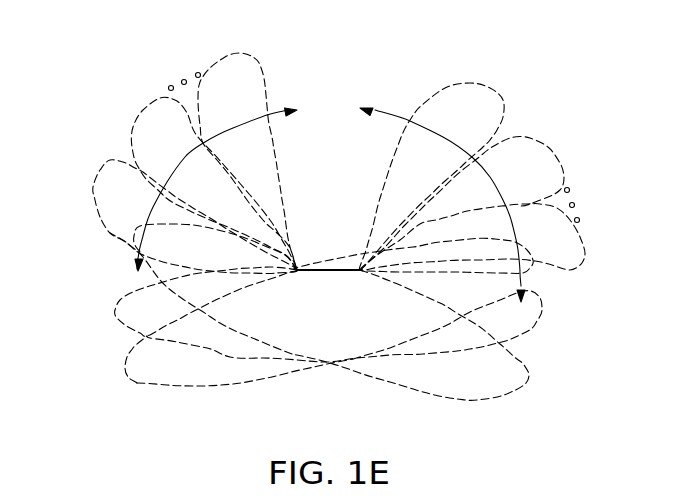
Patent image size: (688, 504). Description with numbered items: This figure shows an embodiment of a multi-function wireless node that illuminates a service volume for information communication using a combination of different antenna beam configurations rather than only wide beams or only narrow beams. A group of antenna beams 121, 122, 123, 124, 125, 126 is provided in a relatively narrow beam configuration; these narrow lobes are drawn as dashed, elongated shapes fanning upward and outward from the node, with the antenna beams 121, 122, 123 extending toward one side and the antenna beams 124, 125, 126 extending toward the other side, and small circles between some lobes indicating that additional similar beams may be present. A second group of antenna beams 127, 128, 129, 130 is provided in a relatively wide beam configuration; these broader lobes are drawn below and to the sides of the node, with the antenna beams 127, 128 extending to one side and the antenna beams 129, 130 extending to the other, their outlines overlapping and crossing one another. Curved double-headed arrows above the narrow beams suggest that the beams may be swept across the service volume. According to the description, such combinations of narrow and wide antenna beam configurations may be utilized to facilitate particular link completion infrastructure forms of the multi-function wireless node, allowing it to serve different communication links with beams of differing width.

The antenna beam 121 is at (507, 107).
The antenna beam 122 is at (562, 177).
The antenna beam 123 is at (582, 262).
The antenna beam 124 is at (93, 187).
The antenna beam 125 is at (138, 115).
The antenna beam 126 is at (220, 63).
The antenna beam 127 is at (544, 305).
The antenna beam 128 is at (457, 399).
The antenna beam 129 is at (193, 385).
The antenna beam 130 is at (120, 312).